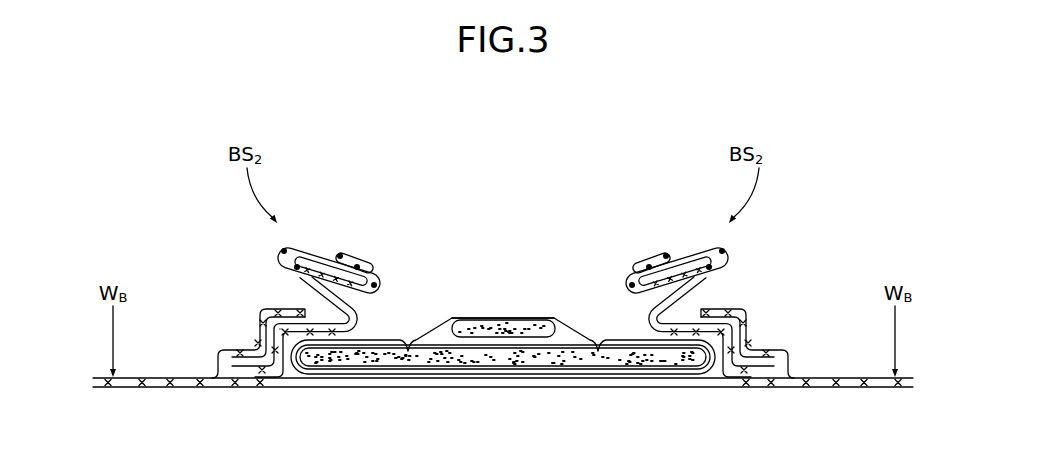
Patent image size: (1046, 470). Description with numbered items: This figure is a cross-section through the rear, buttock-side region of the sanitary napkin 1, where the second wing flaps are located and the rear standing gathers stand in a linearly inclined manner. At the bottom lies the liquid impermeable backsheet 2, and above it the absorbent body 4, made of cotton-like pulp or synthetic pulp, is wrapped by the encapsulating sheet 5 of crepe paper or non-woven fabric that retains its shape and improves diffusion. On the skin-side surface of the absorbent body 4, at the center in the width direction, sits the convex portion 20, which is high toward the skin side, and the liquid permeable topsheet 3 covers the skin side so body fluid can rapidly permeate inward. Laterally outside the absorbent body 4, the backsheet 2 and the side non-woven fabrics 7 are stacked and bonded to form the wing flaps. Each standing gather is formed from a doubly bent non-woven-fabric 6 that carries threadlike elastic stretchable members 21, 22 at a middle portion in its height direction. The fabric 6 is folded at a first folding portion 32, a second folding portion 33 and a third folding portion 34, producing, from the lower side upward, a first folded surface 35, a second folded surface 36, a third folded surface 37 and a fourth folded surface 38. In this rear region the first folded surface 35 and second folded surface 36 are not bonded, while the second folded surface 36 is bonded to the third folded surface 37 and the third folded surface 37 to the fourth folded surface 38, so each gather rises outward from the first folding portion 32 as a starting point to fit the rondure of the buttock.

The sanitary napkin 1 is at (520, 216).
The liquid impermeable backsheet 2 is at (612, 380).
The liquid permeable topsheet 3 is at (516, 318).
The absorbent body 4 is at (409, 357).
The encapsulating sheet 5 is at (537, 344).
The non-woven-fabric for forming standing gathers 6 is at (269, 239).
The side non-woven fabric 7 is at (220, 352).
The convex portion 20 is at (484, 311).
The threadlike elastic stretchable member 21 is at (297, 266).
The threadlike elastic stretchable member 22 is at (340, 256).
The first folding portion 32 is at (357, 318).
The second folding portion 33 is at (281, 250).
The third folding portion 34 is at (376, 283).
The first folded surface 35 is at (294, 322).
The second folded surface 36 is at (320, 295).
The third folded surface 37 is at (320, 262).
The fourth folded surface 38 is at (343, 255).